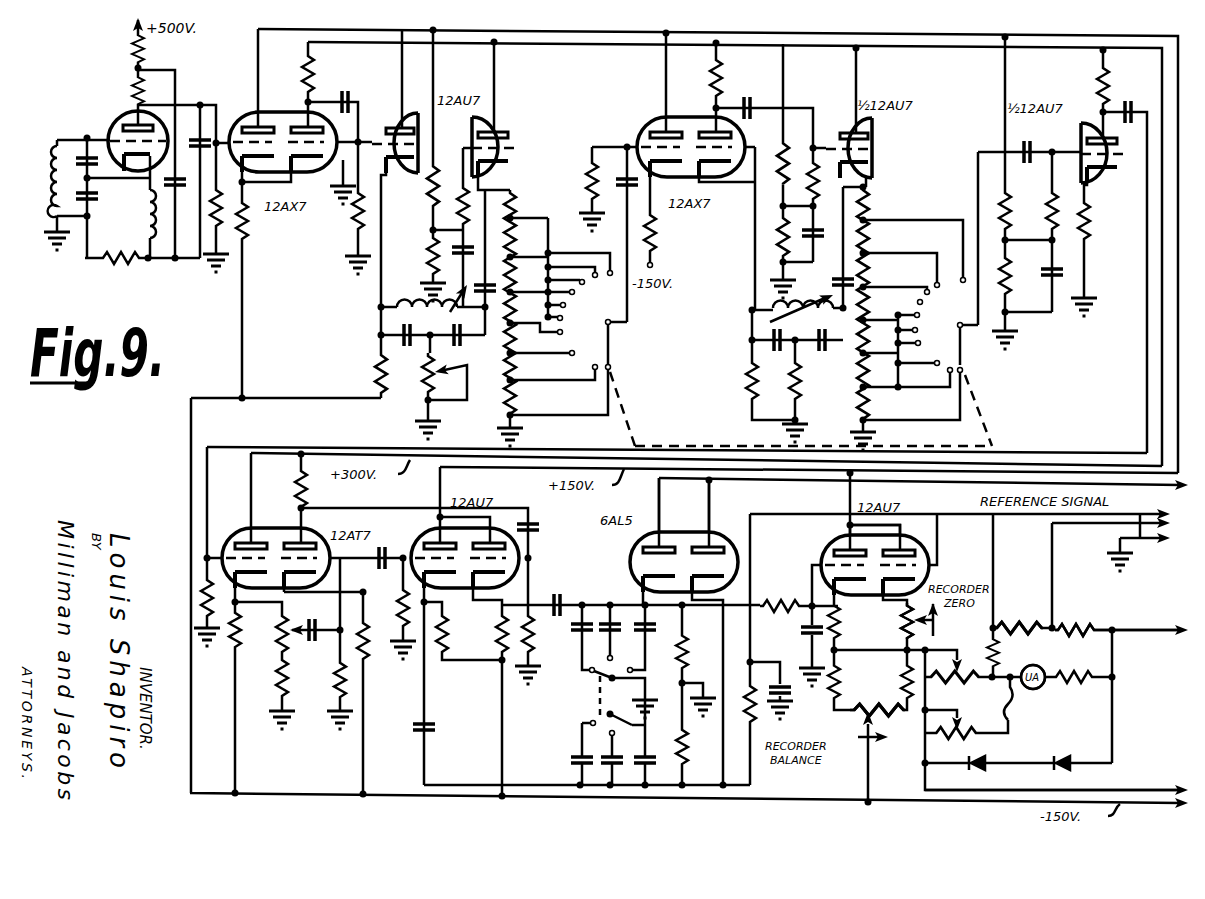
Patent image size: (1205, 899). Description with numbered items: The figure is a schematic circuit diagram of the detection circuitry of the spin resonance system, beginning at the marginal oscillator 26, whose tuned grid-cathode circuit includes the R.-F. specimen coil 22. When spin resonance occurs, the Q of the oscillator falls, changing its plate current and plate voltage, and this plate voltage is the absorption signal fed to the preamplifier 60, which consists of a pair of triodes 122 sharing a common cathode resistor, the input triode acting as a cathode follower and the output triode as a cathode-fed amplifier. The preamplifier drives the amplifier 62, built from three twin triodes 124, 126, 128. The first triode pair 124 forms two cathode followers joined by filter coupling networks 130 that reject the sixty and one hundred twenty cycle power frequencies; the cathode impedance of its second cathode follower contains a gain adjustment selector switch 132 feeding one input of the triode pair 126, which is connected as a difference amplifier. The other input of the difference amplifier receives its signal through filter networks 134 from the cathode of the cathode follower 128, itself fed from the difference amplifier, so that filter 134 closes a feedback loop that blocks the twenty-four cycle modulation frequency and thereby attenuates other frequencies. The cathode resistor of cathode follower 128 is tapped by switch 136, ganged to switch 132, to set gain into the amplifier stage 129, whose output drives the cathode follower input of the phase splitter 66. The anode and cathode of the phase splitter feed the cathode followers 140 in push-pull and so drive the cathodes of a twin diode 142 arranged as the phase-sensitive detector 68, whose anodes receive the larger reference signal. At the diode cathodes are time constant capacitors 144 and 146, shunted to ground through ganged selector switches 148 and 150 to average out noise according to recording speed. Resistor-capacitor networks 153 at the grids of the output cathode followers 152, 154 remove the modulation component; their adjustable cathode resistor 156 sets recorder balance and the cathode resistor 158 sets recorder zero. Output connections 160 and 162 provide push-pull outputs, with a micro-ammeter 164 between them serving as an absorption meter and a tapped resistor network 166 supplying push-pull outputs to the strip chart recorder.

The R.-F. specimen coil 22 is at (56, 146).
The marginal oscillator 26 is at (108, 112).
The preamplifier 60 is at (274, 108).
The amplifier 62 is at (597, 85).
The pair of triodes 122 is at (318, 176).
The first triode pair 124 is at (524, 122).
The triode pair connected as difference amplifier 126 is at (640, 121).
The cathode follower 128 is at (863, 121).
The amplifier stage 129 is at (1091, 185).
The filter coupling networks 130 is at (375, 336).
The gain adjustment selector switch 132 is at (615, 330).
The filter networks 134 is at (740, 343).
The switch 136 is at (958, 328).
The phase splitter 66 is at (266, 522).
The cathode followers 140 is at (433, 512).
The twin diode 142 is at (631, 562).
The phase-sensitive detector 68 is at (684, 531).
The capacitors 144 is at (607, 640).
The capacitors 146 is at (581, 756).
The selector switch 148 is at (590, 677).
The selector switch 150 is at (591, 723).
The output cathode follower 152 is at (824, 544).
The resistor-capacitor networks 153 is at (785, 640).
The output cathode follower 154 is at (906, 534).
The adjustable cathode resistor 156 is at (898, 703).
The cathode resistor 158 is at (903, 618).
The output connection 160 is at (1173, 791).
The output connection 162 is at (1130, 632).
The micro-ammeter 164 is at (1032, 688).
The resistor network 166 is at (1027, 632).